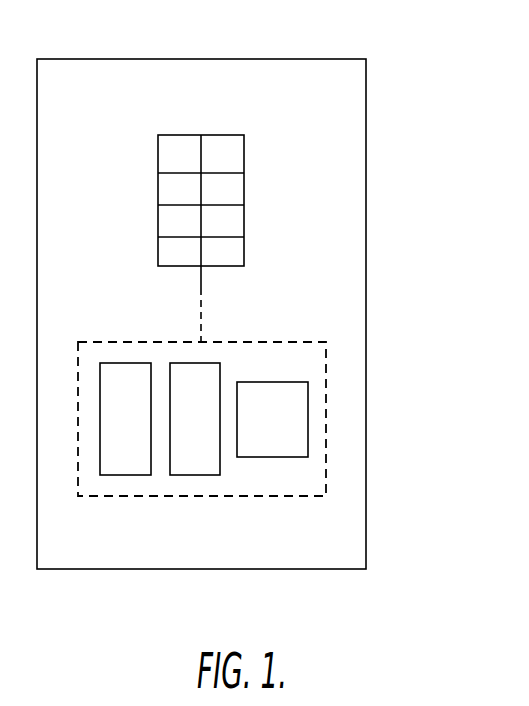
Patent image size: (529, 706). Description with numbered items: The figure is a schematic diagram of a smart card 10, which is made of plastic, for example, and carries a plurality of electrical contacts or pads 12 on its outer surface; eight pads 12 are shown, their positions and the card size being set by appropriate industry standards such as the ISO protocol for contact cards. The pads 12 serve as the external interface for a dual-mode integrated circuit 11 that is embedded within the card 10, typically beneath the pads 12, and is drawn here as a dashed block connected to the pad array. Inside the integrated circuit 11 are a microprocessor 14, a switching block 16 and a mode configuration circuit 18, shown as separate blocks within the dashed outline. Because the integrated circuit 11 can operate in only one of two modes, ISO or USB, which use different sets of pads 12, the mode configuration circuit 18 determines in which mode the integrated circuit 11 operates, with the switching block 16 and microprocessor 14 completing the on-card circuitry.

The smart card 10 is at (334, 118).
The dual-mode integrated circuit 11 is at (326, 350).
The electrical contact pads 12 is at (197, 135).
The microprocessor 14 is at (308, 423).
The switching block 16 is at (203, 475).
The mode configuration circuit 18 is at (118, 475).